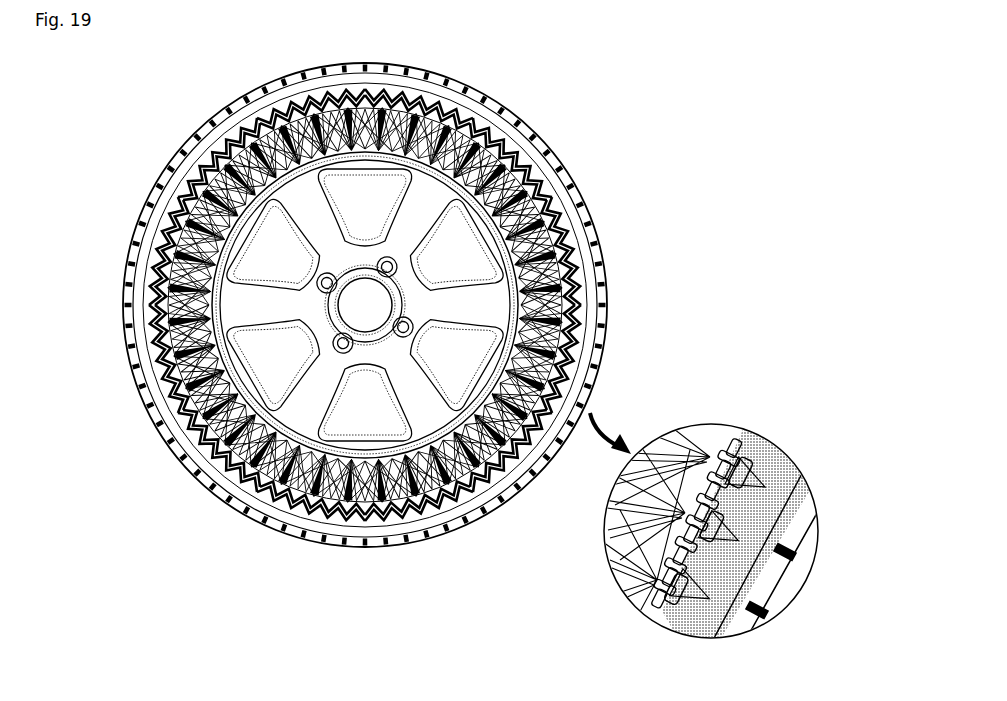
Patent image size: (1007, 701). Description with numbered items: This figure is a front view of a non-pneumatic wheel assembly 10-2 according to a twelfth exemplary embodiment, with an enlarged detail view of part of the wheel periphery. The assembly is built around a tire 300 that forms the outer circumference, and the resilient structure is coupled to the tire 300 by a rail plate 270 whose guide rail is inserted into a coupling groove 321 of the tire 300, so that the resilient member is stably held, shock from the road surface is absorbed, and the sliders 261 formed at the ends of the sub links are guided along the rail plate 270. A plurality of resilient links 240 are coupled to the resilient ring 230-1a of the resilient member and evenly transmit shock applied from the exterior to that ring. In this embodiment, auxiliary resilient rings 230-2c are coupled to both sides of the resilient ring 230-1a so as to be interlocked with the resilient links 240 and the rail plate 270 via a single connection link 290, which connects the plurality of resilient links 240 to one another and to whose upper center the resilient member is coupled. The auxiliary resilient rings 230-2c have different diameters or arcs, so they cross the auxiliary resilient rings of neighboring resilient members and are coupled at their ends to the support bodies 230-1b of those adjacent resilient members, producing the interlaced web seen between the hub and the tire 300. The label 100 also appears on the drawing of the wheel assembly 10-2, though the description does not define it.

The non-pneumatic tire 100 is at (371, 324).
The non-pneumatic wheel assembly 10-2 is at (388, 604).
The auxiliary resilient ring 230-2c is at (233, 98).
The resilient ring 230-1a is at (125, 279).
The support body 230-1b is at (607, 268).
The tire 300 is at (152, 423).
The coupling groove 321 is at (227, 503).
The rail plate 270 is at (438, 517).
The slider 261 is at (727, 430).
The connection link 290 is at (620, 590).
The resilient link 240 is at (637, 607).